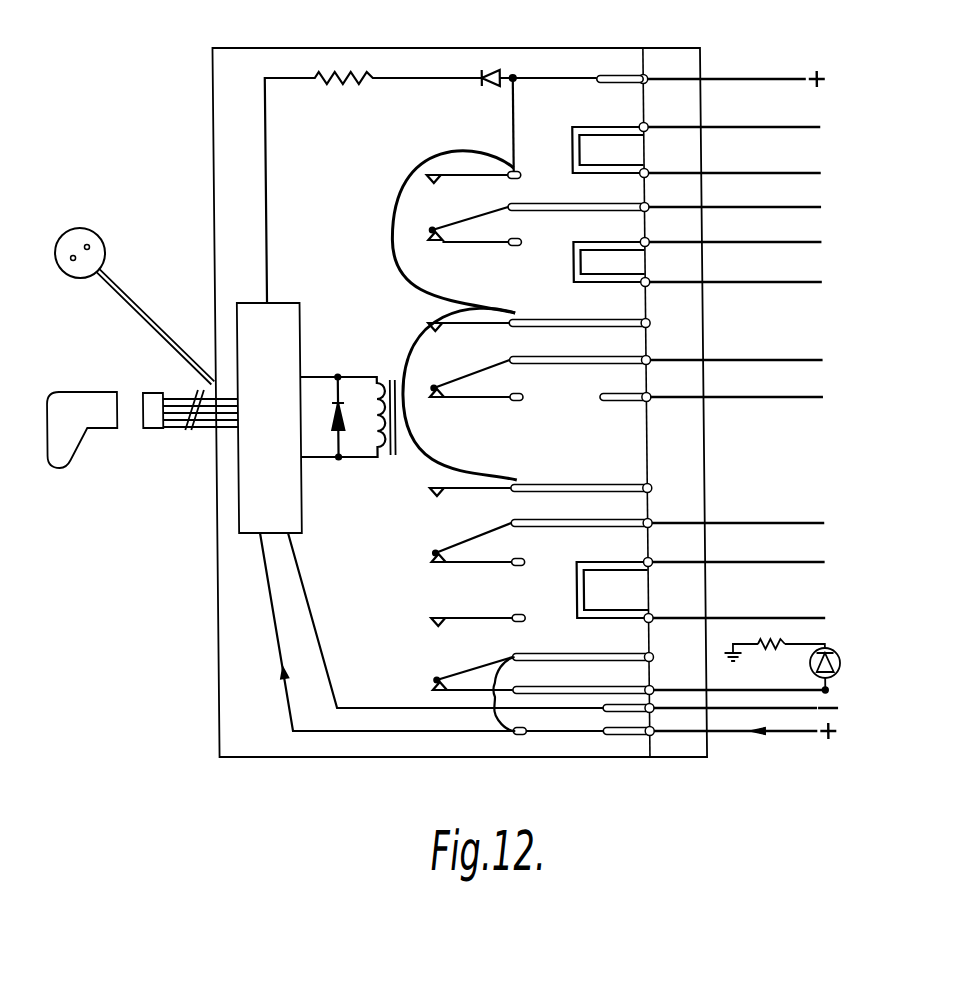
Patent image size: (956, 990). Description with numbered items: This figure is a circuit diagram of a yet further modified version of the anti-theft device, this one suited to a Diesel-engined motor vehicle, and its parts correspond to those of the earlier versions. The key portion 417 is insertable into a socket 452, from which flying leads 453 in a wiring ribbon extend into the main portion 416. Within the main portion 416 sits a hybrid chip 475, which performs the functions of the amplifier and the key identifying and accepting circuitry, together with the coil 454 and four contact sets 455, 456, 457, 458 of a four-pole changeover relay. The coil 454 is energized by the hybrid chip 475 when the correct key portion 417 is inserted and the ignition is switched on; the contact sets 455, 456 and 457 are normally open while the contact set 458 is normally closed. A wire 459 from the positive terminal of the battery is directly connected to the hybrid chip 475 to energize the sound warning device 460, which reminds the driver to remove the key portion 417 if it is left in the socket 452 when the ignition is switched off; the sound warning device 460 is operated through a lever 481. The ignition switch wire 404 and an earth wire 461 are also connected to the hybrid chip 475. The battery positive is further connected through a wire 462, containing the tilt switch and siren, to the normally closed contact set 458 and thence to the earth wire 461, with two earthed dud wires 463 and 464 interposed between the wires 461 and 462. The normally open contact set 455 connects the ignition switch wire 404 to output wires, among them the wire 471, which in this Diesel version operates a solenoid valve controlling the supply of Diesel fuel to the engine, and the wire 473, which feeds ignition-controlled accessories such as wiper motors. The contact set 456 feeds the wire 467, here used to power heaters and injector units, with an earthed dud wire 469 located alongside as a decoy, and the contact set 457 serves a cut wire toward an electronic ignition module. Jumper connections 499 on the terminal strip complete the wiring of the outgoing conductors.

The main portion 416 is at (246, 62).
The ignition switch wire 404 is at (726, 73).
The item corresponding to item 399 499 is at (790, 173).
The wire 471 is at (675, 203).
The wire 467 is at (735, 357).
The earthed dud wire 469 is at (791, 395).
The wire 473 is at (742, 522).
The earthed dud wire 463 is at (792, 560).
The earthed dud wire 464 is at (735, 615).
The wire 462 is at (793, 692).
The earth wire 461 is at (763, 710).
The wire from positive terminal of battery 459 is at (725, 735).
The hybrid chip 475 is at (234, 522).
The coil 454 is at (371, 383).
The contact set 455 is at (440, 206).
The contact set 456 is at (436, 350).
The contact set 457 is at (450, 517).
The contact set 458 is at (448, 653).
The sound warning device 460 is at (88, 232).
The operating lever 481 is at (140, 305).
The key portion 417 is at (69, 397).
The socket 452 is at (144, 415).
The flying lead 453 is at (196, 428).